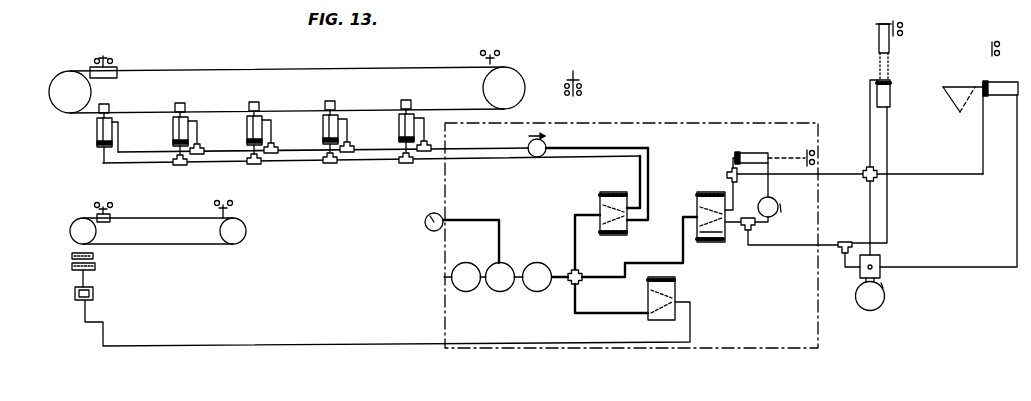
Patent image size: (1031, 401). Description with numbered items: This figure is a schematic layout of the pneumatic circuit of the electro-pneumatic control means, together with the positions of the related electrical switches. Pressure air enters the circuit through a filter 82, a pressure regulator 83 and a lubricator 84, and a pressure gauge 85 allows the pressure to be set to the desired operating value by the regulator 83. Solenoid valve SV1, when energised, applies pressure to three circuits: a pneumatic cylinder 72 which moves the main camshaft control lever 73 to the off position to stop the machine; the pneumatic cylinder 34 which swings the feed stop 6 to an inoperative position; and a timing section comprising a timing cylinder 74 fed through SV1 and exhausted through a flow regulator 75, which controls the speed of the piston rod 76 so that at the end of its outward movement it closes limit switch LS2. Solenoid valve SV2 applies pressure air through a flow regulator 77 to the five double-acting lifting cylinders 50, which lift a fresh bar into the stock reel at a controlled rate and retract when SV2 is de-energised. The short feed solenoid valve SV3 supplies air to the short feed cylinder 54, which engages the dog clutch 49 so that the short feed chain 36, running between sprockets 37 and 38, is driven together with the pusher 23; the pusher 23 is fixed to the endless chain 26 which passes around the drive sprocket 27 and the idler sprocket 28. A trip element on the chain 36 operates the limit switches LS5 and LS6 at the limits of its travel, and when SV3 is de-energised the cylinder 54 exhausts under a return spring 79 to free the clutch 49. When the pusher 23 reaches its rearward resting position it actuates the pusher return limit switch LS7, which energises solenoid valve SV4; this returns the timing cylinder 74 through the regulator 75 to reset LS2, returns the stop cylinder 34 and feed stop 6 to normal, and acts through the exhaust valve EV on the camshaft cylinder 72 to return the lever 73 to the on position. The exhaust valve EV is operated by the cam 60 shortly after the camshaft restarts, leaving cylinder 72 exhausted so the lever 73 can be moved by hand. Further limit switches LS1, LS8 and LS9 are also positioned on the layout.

The feed stop 6 is at (895, 47).
The pusher 23 is at (109, 78).
The endless chain 26 is at (215, 70).
The sprocket 27 is at (75, 105).
The idler sprocket 28 is at (486, 90).
The pneumatic cylinder 34 is at (885, 97).
The short feed chain 36 is at (178, 217).
The sprocket 37 is at (78, 222).
The sprocket 38 is at (246, 232).
The dog clutch 49 is at (96, 266).
The lifting cylinders 50 is at (110, 135).
The short feed cylinder 54 is at (81, 301).
The cam 60 is at (863, 304).
The pneumatic cylinder 72 is at (1005, 90).
The main camshaft control lever 73 is at (955, 108).
The timing cylinder 74 is at (750, 153).
The flow regulator 75 is at (773, 213).
The piston rod 76 is at (770, 154).
The flow regulator 77 is at (545, 145).
The return spring 79 is at (94, 293).
The filter 82 is at (465, 270).
The pressure regulator 83 is at (500, 287).
The lubricator 84 is at (537, 272).
The pressure gauge 85 is at (442, 217).
The exhaust valve EV is at (865, 277).
The limit switch LS1 is at (903, 26).
The limit switch LS2 is at (816, 157).
The limit switch LS5 is at (105, 201).
The limit switch LS6 is at (227, 200).
The pusher return limit switch LS7 is at (106, 58).
The limit switch LS8 is at (494, 51).
The limit switch LS9 is at (986, 52).
The solenoid valve SV1 is at (697, 206).
The solenoid valve SV2 is at (600, 205).
The short feed solenoid valve SV3 is at (673, 293).
The solenoid valve SV4 is at (717, 234).